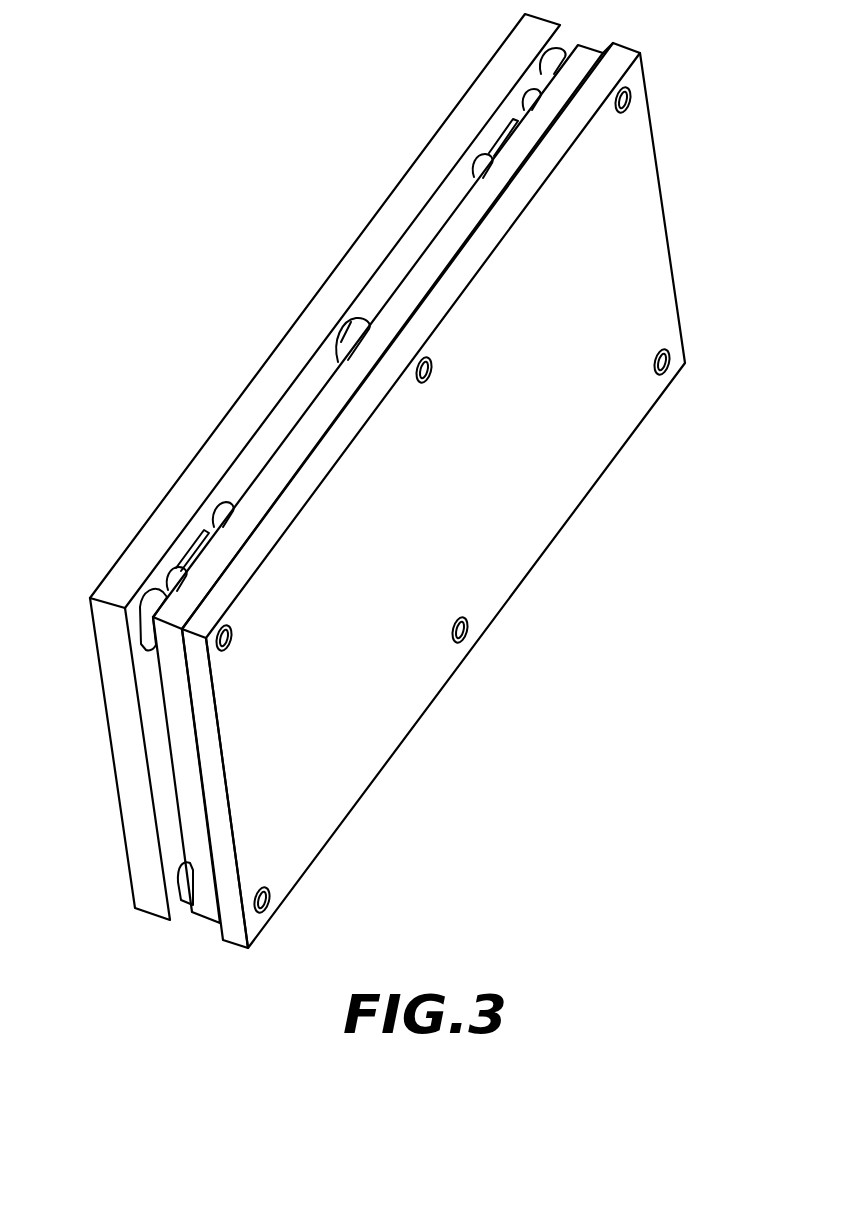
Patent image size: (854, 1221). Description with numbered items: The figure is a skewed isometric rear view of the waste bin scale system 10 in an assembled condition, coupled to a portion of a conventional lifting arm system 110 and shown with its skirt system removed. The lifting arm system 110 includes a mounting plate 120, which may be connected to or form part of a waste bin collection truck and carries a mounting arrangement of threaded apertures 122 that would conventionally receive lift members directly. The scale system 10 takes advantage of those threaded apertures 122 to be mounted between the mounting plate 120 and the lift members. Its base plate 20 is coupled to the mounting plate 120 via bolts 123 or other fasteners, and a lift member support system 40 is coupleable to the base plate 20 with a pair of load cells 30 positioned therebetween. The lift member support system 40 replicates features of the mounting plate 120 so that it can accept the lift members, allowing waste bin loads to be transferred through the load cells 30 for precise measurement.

The waste bin scale system 10 is at (191, 135).
The base plate 20 is at (212, 907).
The load cells 30 is at (484, 118).
The lift member support system 40 is at (119, 733).
The lifting arm system 110 is at (690, 260).
The mounting plate 120 is at (565, 462).
The threaded apertures 122 is at (634, 100).
The bolts 123 is at (565, 53).